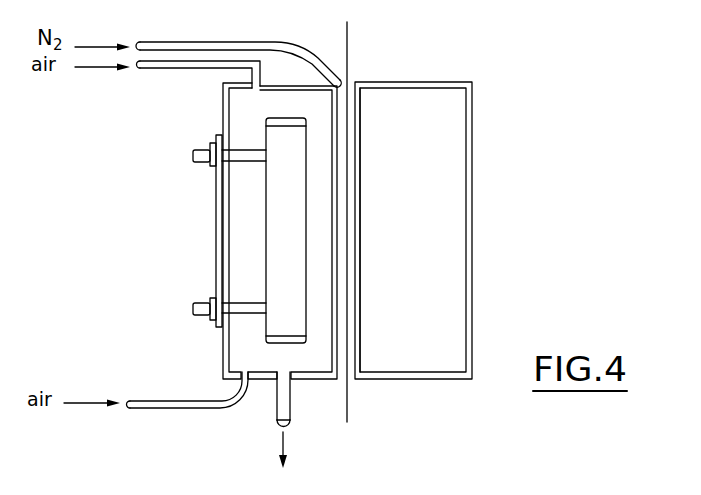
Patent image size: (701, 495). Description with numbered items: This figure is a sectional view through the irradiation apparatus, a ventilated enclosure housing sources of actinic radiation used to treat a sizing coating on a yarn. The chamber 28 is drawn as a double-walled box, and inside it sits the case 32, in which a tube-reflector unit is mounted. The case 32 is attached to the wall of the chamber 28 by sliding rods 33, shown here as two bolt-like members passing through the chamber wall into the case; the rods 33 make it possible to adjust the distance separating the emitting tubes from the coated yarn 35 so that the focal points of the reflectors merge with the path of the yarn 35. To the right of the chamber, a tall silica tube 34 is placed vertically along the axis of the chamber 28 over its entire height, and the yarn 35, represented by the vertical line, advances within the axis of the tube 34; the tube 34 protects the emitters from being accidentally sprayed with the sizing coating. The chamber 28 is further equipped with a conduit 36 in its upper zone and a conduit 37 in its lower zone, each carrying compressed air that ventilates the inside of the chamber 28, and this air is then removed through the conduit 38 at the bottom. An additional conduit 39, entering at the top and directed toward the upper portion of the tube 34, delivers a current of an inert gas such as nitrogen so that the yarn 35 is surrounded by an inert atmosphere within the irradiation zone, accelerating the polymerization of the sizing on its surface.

The chamber 28 is at (450, 213).
The case 32 is at (266, 213).
The sliding rod 33 is at (191, 153).
The silica tube 34 is at (360, 305).
The coated yarn 35 is at (348, 56).
The conduit 36 is at (175, 70).
The conduit 37 is at (176, 401).
The conduit 38 is at (292, 410).
The additional conduit 39 is at (218, 41).